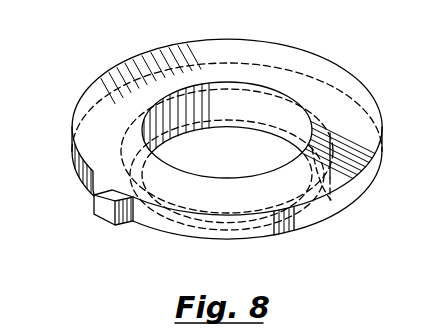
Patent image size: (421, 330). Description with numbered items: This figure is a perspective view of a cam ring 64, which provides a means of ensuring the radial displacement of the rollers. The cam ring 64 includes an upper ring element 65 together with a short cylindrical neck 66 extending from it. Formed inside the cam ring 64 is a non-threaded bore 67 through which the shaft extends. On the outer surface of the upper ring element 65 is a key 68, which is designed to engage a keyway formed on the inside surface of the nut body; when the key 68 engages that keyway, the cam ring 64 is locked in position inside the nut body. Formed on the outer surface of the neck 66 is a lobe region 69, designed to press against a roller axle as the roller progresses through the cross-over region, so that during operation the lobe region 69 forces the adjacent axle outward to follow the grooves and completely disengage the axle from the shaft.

The cam ring 64 is at (104, 66).
The upper ring element 65 is at (79, 100).
The short cylindrical neck 66 is at (121, 161).
The non-threaded bore 67 is at (240, 165).
The key 68 is at (103, 212).
The lobe region 69 is at (300, 229).